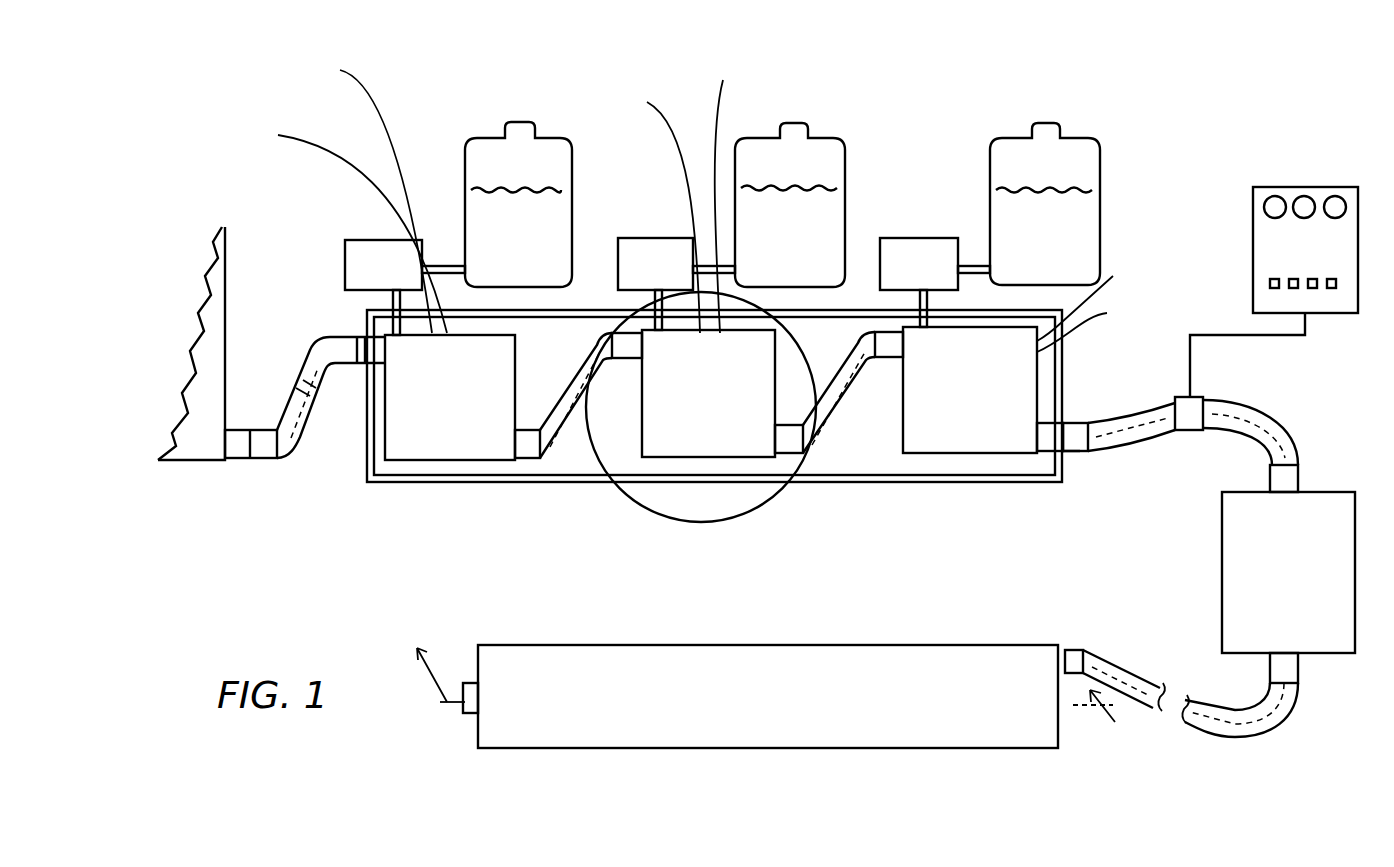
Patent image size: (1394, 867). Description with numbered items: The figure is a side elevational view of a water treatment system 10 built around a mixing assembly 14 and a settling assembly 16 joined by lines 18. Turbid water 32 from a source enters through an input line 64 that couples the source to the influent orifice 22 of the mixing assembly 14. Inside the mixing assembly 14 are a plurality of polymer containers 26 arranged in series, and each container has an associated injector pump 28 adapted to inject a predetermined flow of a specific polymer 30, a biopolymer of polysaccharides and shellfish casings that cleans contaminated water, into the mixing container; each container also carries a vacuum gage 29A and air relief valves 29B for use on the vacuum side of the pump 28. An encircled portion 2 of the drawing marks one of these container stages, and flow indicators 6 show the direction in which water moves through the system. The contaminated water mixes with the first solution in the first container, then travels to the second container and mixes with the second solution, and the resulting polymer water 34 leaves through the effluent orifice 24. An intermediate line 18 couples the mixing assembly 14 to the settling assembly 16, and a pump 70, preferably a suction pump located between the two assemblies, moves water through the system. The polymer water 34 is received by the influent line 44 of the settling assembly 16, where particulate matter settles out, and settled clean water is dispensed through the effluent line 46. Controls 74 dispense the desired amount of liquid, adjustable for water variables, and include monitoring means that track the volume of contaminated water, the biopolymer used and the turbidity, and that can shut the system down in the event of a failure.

The system 10 is at (1215, 156).
The detail region 2 is at (630, 526).
The mixing assembly 14 is at (368, 483).
The settling assembly 16 is at (913, 645).
The intermediate line 18 is at (1290, 440).
The influent orifice 22 is at (355, 364).
The effluent orifice 24 is at (1086, 420).
The polymer containers 26 is at (432, 406).
The injector pump 28 is at (372, 243).
The vacuum gage 29A is at (689, 210).
The air relief valves 29B is at (729, 192).
The specific polymer 30 is at (478, 243).
The turbid water 32 is at (200, 448).
The polymer water 34 is at (1090, 456).
The influent line 44 is at (1075, 650).
The effluent line 46 is at (470, 683).
The flow direction 6 is at (777, 700).
The input line 64 is at (301, 372).
The pump 70 is at (1264, 572).
The controls 74 is at (1288, 268).